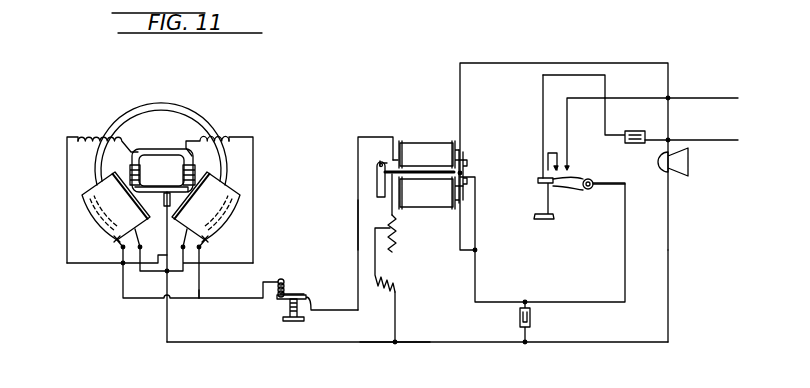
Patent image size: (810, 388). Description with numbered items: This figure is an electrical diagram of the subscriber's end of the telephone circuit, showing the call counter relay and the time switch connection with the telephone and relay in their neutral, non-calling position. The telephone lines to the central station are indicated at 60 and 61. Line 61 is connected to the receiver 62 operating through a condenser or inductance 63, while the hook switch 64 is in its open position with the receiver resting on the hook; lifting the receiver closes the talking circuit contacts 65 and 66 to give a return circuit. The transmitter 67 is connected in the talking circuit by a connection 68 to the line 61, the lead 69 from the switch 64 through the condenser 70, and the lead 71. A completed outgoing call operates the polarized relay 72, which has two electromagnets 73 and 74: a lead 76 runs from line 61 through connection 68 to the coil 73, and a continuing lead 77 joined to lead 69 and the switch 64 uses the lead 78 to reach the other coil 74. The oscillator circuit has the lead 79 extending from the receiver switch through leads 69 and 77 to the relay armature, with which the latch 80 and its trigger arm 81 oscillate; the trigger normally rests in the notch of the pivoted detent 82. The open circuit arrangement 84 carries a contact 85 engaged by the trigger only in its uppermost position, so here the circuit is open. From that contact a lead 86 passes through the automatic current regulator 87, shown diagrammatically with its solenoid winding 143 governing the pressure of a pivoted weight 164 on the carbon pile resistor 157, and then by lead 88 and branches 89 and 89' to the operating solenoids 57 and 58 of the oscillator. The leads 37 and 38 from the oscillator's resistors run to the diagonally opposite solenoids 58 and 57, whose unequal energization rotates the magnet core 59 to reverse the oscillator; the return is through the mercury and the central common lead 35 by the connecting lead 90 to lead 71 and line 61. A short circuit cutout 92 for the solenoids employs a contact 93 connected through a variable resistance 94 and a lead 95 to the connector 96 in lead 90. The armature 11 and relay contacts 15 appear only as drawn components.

The armature 11 is at (151, 151).
The relay contacts 15 is at (467, 161).
The electric lead 35 is at (168, 203).
The lead wire 37 is at (90, 139).
The lead wire 38 is at (238, 137).
The operating solenoid 57 is at (102, 218).
The operating solenoid 58 is at (230, 212).
The core or magnet 59 is at (183, 108).
The telephone line 60 is at (729, 98).
The telephone line 61 is at (718, 141).
The receiver 62 is at (540, 207).
The condenser or inductance 63 is at (636, 131).
The hook switch 64 is at (579, 191).
The talking circuit contact 65 is at (553, 169).
The talking circuit contact 66 is at (569, 167).
The transmitter 67 is at (689, 173).
The connection 68 is at (670, 140).
The lead 69 is at (625, 255).
The condenser 70 is at (532, 320).
The lead 71 is at (668, 332).
The relay 72 is at (441, 140).
The electromagnet 73 is at (419, 162).
The electromagnet 74 is at (419, 199).
The lead 76 is at (582, 63).
The lead 77 is at (476, 292).
The lead 78 is at (460, 240).
The lead 79 is at (476, 214).
The latch 80 is at (375, 162).
The trigger arm 81 is at (399, 165).
The pivoted detent 82 is at (377, 180).
The open circuit arrangement 84 is at (356, 172).
The contact 85 is at (392, 161).
The lead 86 is at (357, 213).
The automatic current regulator 87 is at (298, 292).
The lead 88 is at (233, 298).
The branch 89 is at (178, 275).
The branch 89' is at (219, 285).
The connecting lead 90 is at (165, 328).
The short circuit cutout 92 is at (402, 279).
The contact 93 is at (404, 181).
The variable resistance 94 is at (388, 228).
The lead 95 is at (397, 317).
The connector 96 is at (394, 344).
The solenoid winding 143 is at (281, 284).
The carbon pile resistor 157 is at (289, 308).
The pivoted weight 164 is at (308, 296).